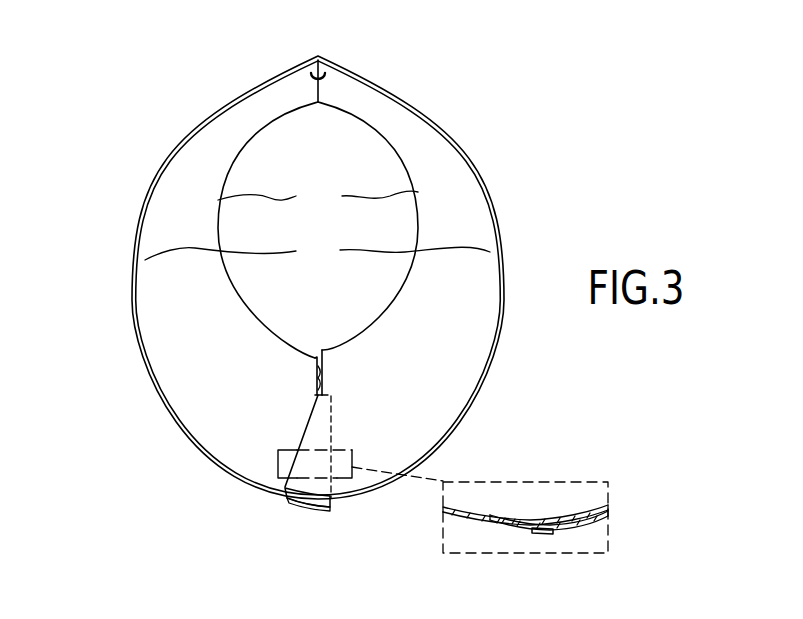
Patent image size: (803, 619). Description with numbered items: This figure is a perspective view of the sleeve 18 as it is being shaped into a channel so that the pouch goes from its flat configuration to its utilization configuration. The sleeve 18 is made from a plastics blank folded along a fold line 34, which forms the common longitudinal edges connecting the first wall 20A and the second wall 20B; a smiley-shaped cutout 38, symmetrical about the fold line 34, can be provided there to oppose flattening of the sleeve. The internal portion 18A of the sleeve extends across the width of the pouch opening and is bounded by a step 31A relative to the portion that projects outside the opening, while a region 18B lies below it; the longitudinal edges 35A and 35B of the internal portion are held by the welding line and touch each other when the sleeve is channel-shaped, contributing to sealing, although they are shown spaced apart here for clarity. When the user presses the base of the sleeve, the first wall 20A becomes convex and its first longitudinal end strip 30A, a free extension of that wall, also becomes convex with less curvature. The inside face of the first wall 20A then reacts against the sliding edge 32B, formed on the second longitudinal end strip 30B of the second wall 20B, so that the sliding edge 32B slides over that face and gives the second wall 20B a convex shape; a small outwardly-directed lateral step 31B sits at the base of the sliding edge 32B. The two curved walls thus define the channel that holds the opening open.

The sleeve 18 is at (98, 232).
The internal portion of the sleeve 18A is at (318, 196).
The second cushion chamber 18B is at (317, 230).
The first wall 20A is at (188, 349).
The second wall 20B is at (420, 360).
The first longitudinal end strip 30A is at (332, 503).
The second longitudinal end strip 30B is at (293, 502).
The step 31A is at (329, 386).
The outwardly-directed lateral step 31B is at (316, 383).
The sliding edge 32B is at (302, 431).
The fold line 34 is at (322, 69).
The edge of internal portion 35A is at (321, 350).
The edge of internal portion 35B is at (314, 357).
The cutout 38 is at (318, 79).